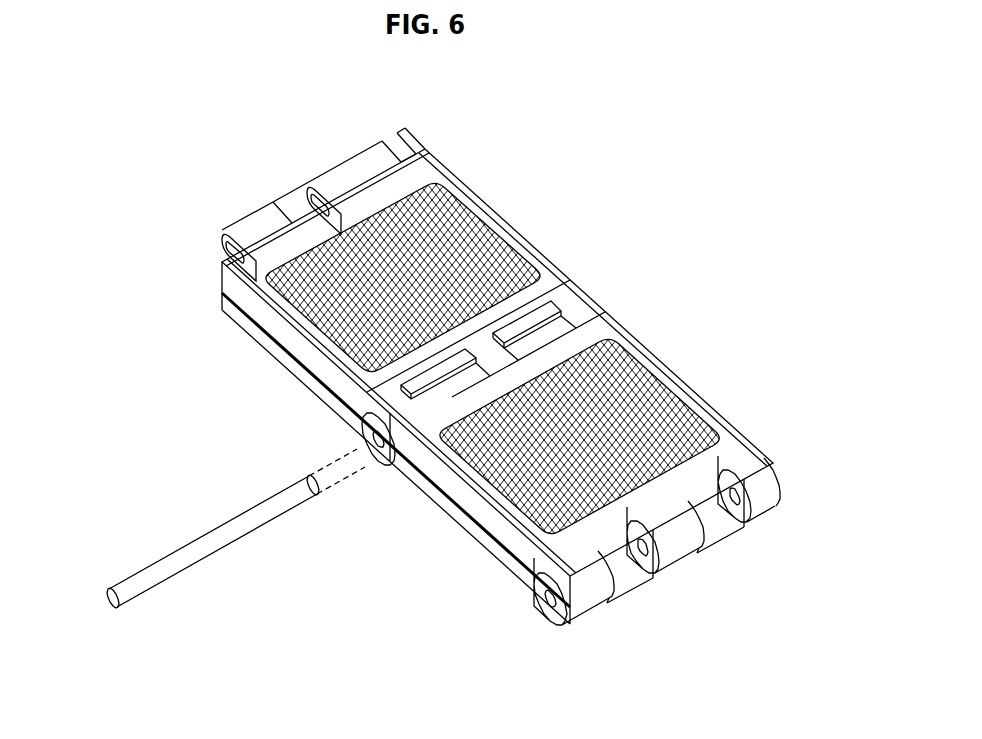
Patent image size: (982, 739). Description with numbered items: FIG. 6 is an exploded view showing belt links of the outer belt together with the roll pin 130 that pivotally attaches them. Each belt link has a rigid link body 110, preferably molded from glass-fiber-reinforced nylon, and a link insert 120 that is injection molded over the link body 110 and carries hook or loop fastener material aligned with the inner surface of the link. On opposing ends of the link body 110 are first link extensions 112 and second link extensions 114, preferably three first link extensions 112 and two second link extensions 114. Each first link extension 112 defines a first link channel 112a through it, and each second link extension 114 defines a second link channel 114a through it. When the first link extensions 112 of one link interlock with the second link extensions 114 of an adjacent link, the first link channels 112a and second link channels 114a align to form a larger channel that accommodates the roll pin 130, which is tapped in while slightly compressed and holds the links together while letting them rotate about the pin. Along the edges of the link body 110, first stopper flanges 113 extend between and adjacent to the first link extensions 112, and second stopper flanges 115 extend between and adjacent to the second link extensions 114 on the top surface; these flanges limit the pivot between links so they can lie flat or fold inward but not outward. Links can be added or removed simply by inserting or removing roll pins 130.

The link body 110 is at (428, 150).
The first link extension 112 is at (560, 300).
The first link channel 112a is at (736, 500).
The first stopper flange 113 is at (700, 500).
The second link extension 114 is at (355, 165).
The second link channel 114a is at (318, 196).
The second stopper flange 115 is at (413, 150).
The link insert 120 is at (470, 220).
The roll pin 130 is at (260, 512).